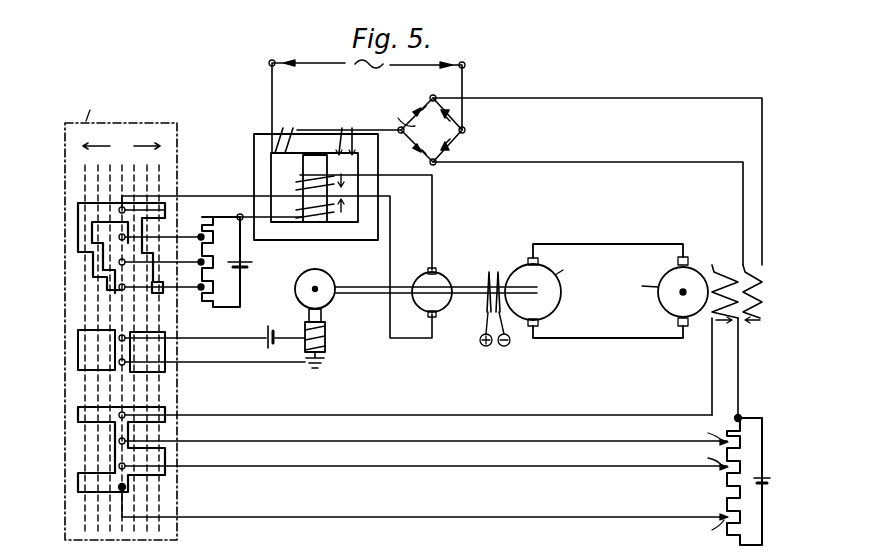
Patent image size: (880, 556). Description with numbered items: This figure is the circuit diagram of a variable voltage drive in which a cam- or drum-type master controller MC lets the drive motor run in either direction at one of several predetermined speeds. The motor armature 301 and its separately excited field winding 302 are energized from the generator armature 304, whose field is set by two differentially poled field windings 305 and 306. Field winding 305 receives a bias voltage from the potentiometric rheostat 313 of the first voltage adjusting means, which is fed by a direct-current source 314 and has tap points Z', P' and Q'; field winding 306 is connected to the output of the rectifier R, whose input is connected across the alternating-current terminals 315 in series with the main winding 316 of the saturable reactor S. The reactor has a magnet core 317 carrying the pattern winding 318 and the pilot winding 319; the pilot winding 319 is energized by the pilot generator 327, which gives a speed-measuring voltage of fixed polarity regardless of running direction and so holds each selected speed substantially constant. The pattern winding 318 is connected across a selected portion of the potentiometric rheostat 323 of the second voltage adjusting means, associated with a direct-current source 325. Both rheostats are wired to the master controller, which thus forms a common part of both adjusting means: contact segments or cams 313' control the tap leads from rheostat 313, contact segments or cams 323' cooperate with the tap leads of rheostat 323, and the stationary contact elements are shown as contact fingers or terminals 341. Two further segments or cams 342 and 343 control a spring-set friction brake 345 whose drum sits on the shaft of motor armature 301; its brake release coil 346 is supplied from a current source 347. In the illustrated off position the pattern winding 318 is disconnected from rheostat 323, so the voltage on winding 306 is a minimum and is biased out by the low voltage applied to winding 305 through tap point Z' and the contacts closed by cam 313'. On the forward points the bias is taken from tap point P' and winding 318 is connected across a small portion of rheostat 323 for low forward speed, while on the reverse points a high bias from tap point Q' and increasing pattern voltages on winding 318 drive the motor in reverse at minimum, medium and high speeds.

The motor armature 301 is at (560, 301).
The motor field winding 302 is at (483, 300).
The generator armature 304 is at (666, 274).
The generator field winding 305 is at (722, 270).
The generator field winding 306 is at (760, 294).
The potentiometric rheostat 313 is at (724, 480).
The contact segments or cams 313' is at (92, 462).
The direct-current source 314 is at (766, 477).
The alternating-current terminals 315 is at (268, 65).
The main winding of reactor 316 is at (286, 128).
The magnet core 317 is at (254, 150).
The pattern winding 318 is at (309, 224).
The pilot winding 319 is at (298, 186).
The potentiometric rheostat 323 is at (246, 262).
The contact segments or cams 323' is at (92, 244).
The direct-current source 325 is at (254, 261).
The pilot generator 327 is at (441, 281).
The contact fingers or terminals 341 is at (118, 292).
The contact segment or cam 342 is at (78, 349).
The contact segment or cam 343 is at (165, 368).
The spring-set friction brake 345 is at (330, 298).
The brake release coil 346 is at (326, 340).
The current source 347 is at (262, 340).